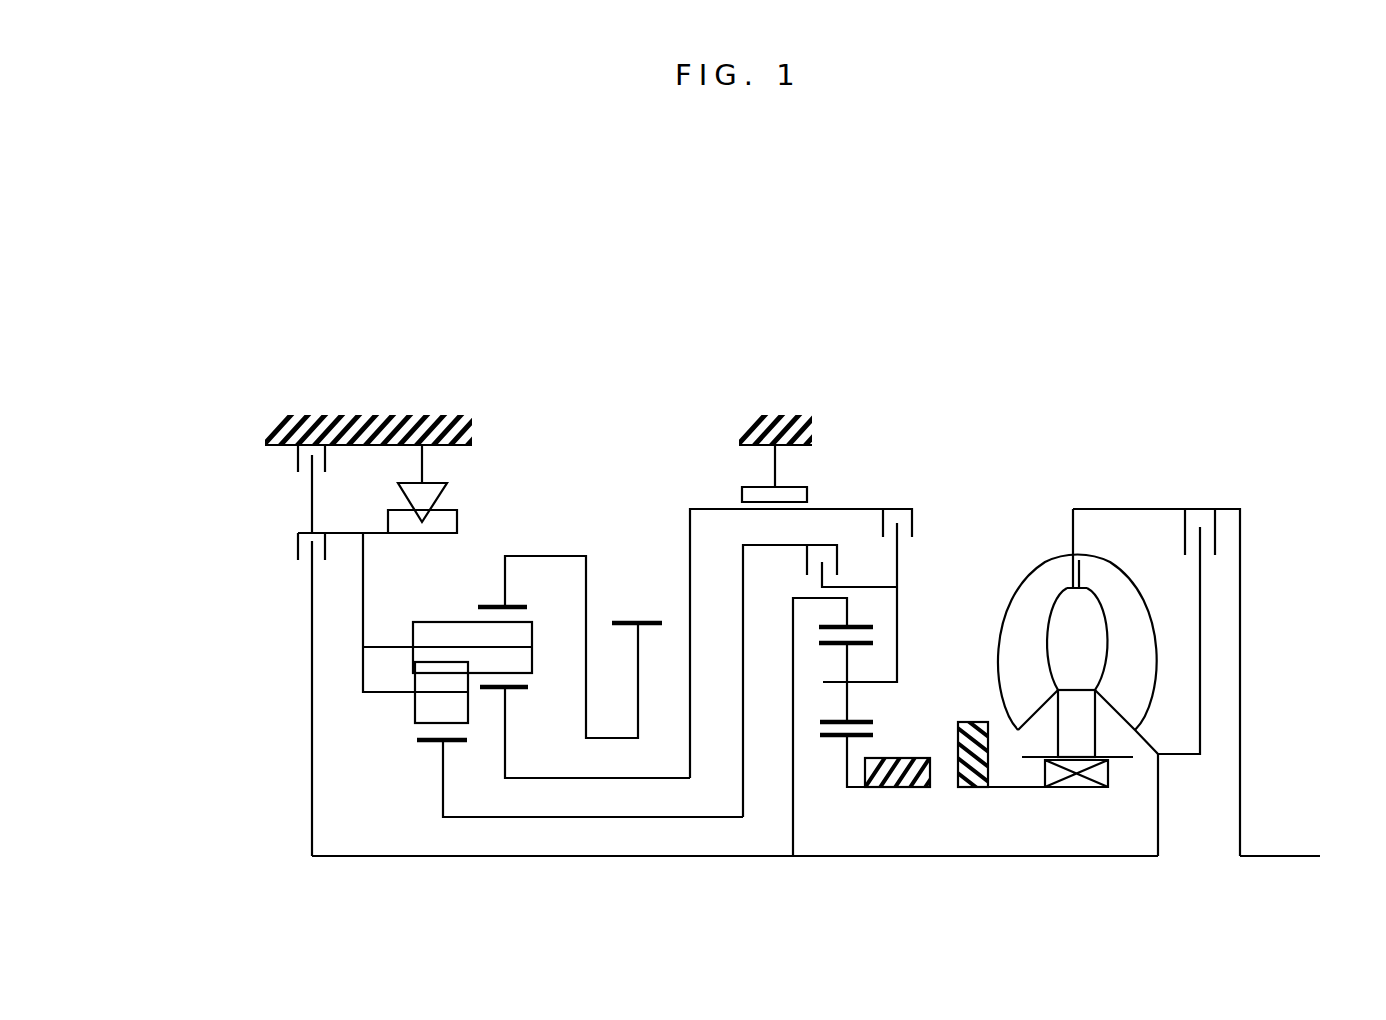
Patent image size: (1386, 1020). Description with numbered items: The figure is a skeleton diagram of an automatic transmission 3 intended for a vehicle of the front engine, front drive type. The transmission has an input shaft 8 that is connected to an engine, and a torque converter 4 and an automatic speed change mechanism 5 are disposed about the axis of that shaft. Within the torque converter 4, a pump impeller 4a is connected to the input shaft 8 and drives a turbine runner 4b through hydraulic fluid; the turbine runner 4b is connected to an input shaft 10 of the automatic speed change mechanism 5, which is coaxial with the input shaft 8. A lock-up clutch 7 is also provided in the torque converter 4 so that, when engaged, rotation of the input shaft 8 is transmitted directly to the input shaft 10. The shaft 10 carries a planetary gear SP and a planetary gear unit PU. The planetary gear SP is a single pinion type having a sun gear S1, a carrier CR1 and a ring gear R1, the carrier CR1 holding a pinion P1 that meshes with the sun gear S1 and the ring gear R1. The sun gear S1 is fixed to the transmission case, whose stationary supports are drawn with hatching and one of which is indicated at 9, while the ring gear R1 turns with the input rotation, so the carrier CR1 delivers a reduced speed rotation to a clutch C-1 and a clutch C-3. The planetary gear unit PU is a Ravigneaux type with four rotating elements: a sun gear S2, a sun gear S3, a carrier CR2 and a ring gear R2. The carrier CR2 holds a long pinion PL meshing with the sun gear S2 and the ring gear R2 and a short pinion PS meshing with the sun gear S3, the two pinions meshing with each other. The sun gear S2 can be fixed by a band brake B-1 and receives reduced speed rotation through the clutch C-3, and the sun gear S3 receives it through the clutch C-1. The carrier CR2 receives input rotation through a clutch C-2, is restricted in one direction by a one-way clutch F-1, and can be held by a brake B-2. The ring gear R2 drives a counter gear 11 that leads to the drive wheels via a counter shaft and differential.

The automatic transmission 3 is at (830, 258).
The torque converter 4 is at (1047, 499).
The pump impeller 4a is at (1055, 582).
The turbine runner 4b is at (1120, 608).
The automatic speed change mechanism 5 is at (673, 378).
The lock-up clutch 7 is at (1222, 508).
The input shaft 8 is at (1262, 853).
The transmission case 9 is at (808, 450).
The input shaft 10 is at (1117, 858).
The counter gear 11 is at (645, 626).
The brake B-1 is at (791, 440).
The brake B-2 is at (377, 424).
The one-way clutch F-1 is at (422, 453).
The clutch C-1 is at (820, 681).
The clutch C-2 is at (310, 563).
The clutch C-3 is at (822, 643).
The carrier CR1 is at (916, 603).
The carrier CR2 is at (352, 665).
The ring gear R1 is at (862, 628).
The ring gear R2 is at (517, 602).
The sun gear S1 is at (838, 740).
The sun gear S2 is at (513, 690).
The sun gear S3 is at (431, 748).
The pinion P1 is at (850, 708).
The long pinion PL is at (520, 633).
The short pinion PS is at (431, 706).
The planetary gear unit PU is at (497, 522).
The planetary gear SP is at (883, 728).